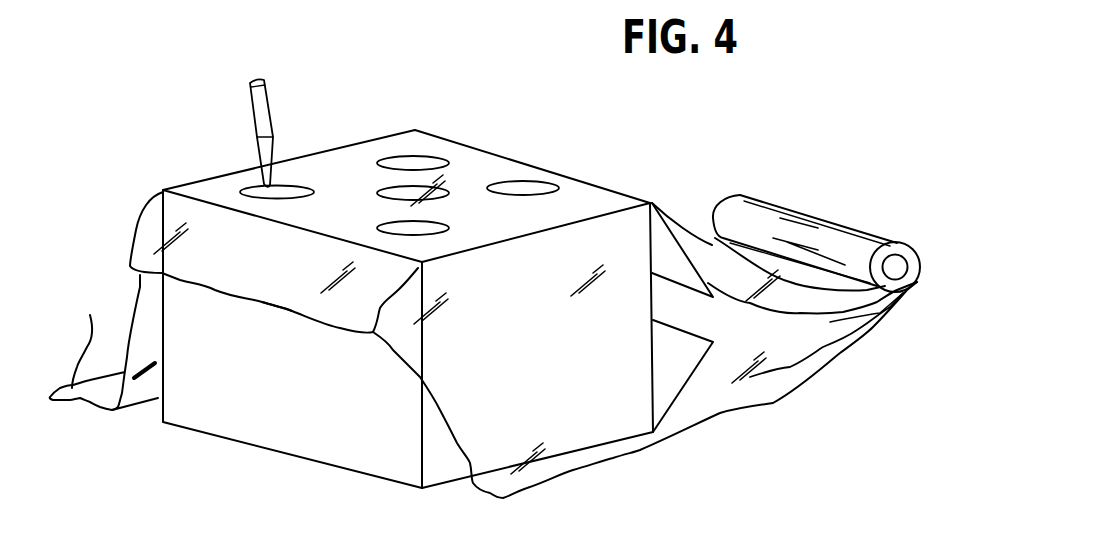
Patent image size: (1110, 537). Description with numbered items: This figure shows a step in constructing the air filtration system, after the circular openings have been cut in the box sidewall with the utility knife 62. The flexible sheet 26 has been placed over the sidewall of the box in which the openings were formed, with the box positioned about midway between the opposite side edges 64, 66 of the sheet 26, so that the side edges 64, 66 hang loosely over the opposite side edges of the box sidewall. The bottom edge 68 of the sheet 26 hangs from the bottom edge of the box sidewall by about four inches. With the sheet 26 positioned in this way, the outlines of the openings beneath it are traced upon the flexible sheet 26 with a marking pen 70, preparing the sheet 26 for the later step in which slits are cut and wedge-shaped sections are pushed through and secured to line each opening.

The flexible sheet 26 is at (792, 210).
The utility knife 62 is at (253, 417).
The side edge of the sheet 64 is at (600, 470).
The side edge of the sheet 66 is at (90, 315).
The bottom edge of the sheet 68 is at (277, 303).
The marking pen 70 is at (253, 108).